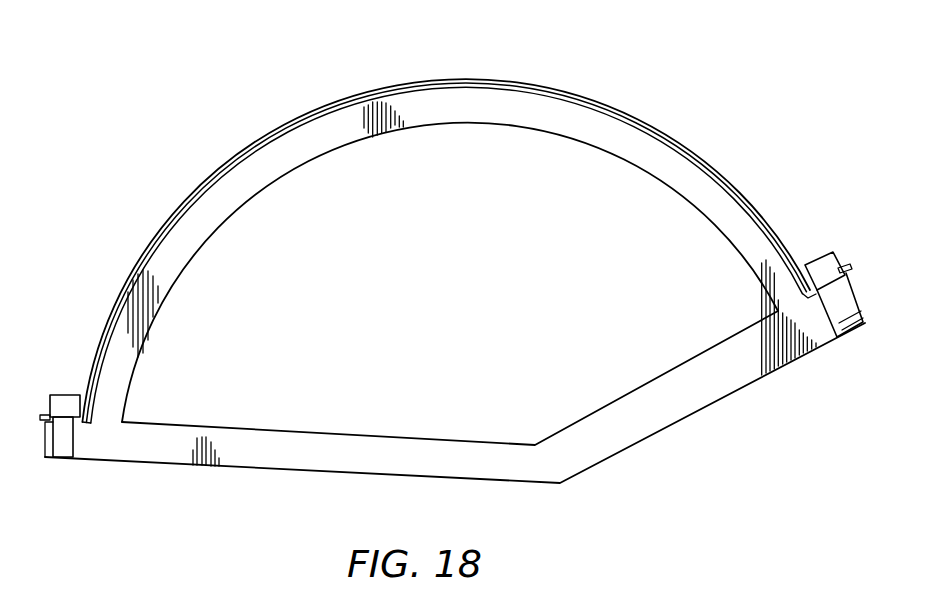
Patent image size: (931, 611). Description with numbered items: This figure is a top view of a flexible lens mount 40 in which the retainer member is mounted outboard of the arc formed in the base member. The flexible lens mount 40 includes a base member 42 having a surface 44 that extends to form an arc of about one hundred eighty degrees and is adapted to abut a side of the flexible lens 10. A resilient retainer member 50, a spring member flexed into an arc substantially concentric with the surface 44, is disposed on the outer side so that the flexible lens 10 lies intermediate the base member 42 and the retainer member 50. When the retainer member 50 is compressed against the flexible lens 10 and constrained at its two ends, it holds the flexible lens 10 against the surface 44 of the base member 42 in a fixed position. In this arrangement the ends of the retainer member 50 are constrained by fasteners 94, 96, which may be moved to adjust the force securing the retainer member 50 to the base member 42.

The flexible lens mount 40 is at (683, 92).
The surface 44 is at (239, 166).
The retainer member 50 is at (757, 208).
The flexible lens 10 is at (733, 190).
The base member 42 is at (248, 464).
The fastener 94 is at (68, 398).
The fastener 96 is at (821, 265).